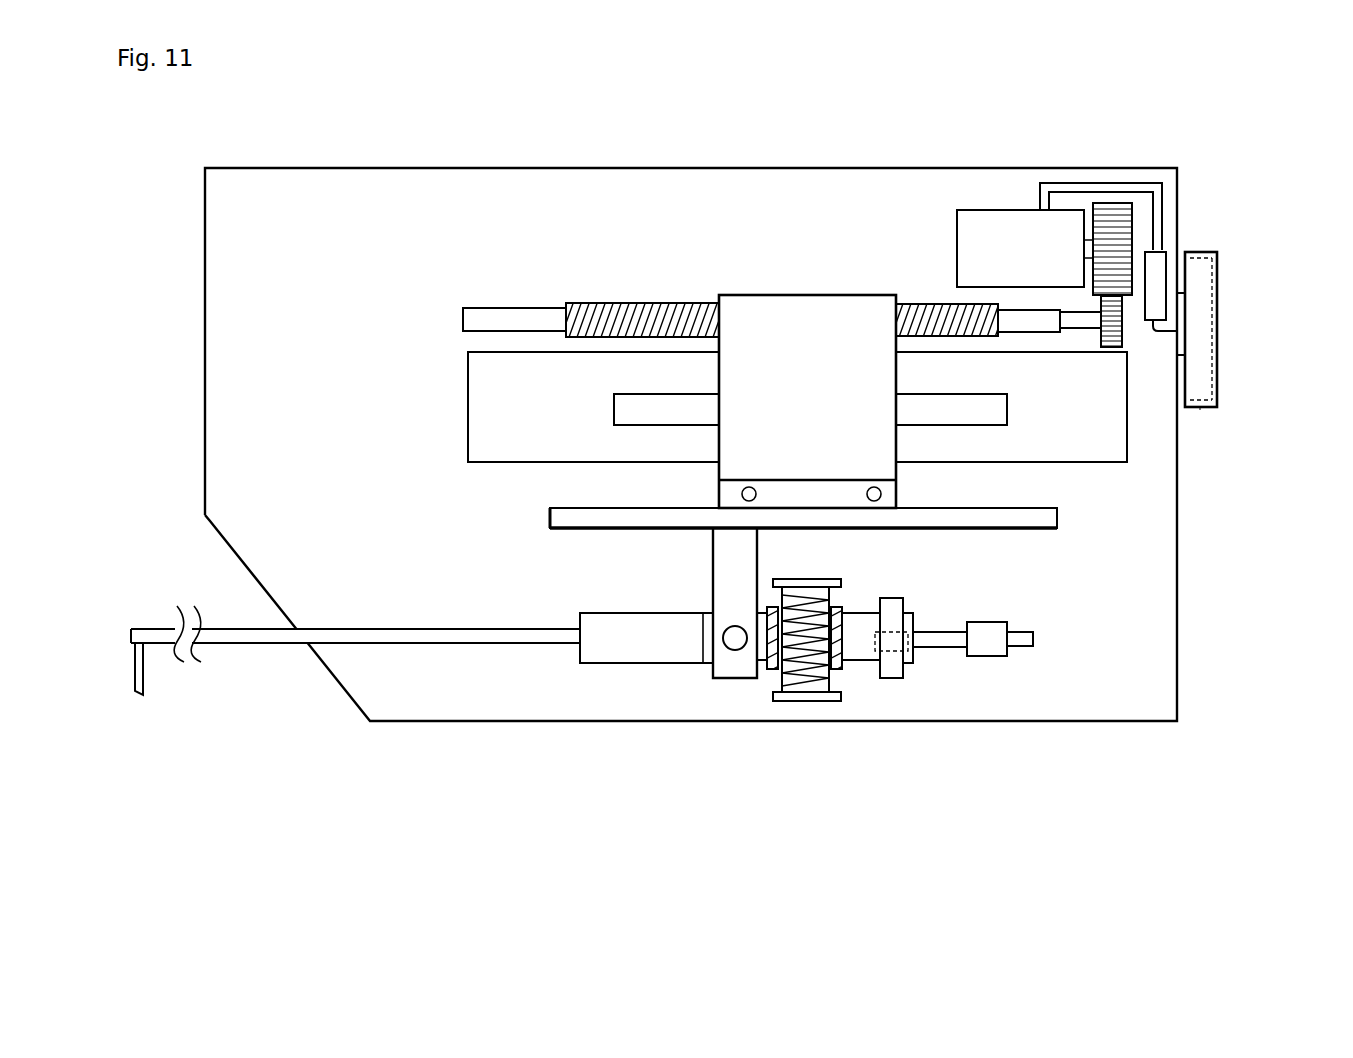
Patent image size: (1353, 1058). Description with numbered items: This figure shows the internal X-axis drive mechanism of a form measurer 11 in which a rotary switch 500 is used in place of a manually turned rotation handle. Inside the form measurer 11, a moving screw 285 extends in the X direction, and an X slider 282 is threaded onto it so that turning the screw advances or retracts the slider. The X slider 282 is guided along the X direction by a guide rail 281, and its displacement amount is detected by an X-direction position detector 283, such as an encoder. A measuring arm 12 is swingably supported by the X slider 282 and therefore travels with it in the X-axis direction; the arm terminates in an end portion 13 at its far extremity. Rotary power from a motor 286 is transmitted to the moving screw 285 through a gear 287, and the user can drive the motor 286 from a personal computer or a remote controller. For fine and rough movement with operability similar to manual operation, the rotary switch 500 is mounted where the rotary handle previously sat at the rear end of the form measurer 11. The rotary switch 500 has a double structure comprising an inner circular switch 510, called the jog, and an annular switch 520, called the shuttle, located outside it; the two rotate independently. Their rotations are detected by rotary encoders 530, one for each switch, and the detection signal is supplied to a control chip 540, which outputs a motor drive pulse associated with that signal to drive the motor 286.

The form measurer 11 is at (650, 172).
The measuring arm 12 is at (250, 638).
The tip portion 13 is at (135, 678).
The guide rail 281 is at (494, 403).
The X slider 282 is at (878, 380).
The X-direction position detector 283 is at (658, 406).
The moving screw 285 is at (905, 300).
The motor 286 is at (1008, 210).
The gear 287 is at (1112, 203).
The rotary switch 500 is at (1272, 260).
The circular switch (jog) 510 is at (1215, 365).
The annular switch (shuttle) 520 is at (1200, 407).
The rotary encoder 530 is at (1180, 338).
The control chip 540 is at (1160, 257).